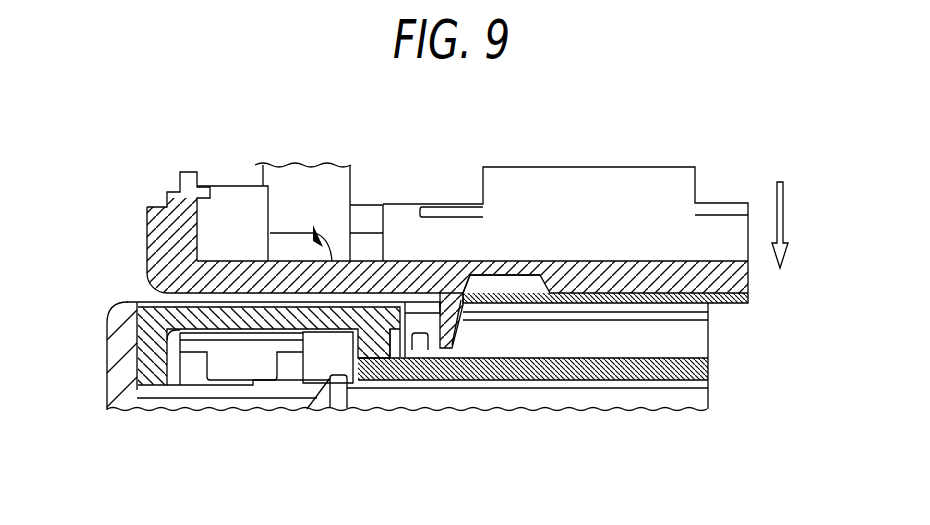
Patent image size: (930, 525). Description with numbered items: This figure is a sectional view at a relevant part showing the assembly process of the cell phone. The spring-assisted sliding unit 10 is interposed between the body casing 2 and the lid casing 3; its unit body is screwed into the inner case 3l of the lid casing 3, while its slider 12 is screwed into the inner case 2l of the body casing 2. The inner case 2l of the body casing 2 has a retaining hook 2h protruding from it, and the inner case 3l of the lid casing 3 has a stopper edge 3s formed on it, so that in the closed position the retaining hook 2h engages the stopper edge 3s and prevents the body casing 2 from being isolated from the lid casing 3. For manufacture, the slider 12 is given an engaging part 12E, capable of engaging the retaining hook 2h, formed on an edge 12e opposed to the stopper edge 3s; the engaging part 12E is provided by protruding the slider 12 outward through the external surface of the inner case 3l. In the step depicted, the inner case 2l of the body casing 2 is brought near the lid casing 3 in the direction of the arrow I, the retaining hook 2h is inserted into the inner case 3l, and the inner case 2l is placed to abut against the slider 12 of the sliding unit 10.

The body casing 2 is at (725, 188).
The inner case 2l is at (146, 243).
The retaining hook 2h is at (457, 349).
The lid casing 3 is at (683, 413).
The inner case 3l is at (110, 338).
The stopper edge 3s is at (396, 330).
The spring-assisted sliding unit 10 is at (710, 338).
The slider 12 is at (750, 295).
The engaging part 12E is at (488, 296).
The edge 12e is at (463, 330).
The arrow I is at (785, 225).